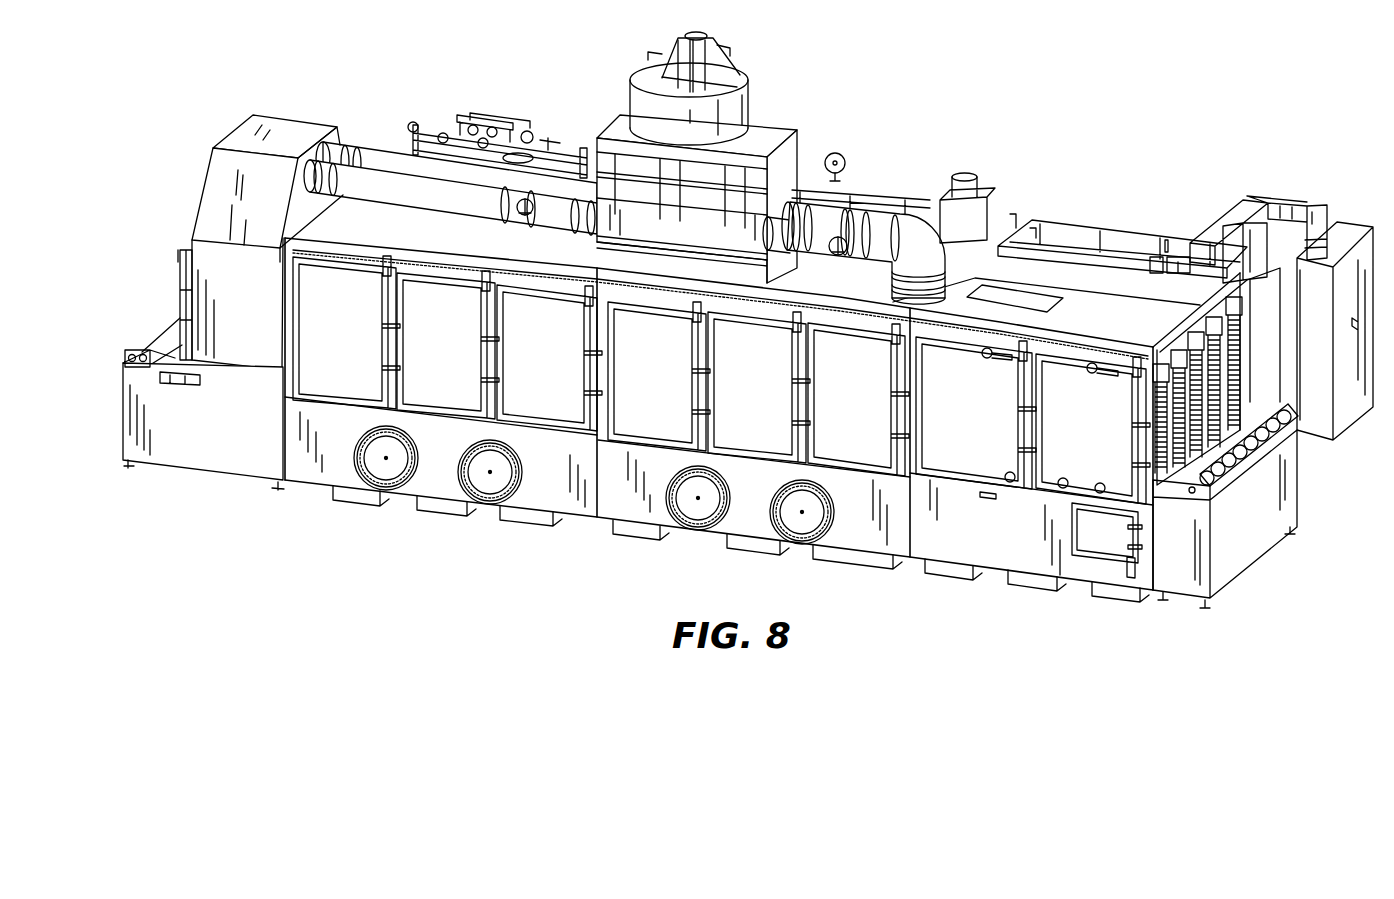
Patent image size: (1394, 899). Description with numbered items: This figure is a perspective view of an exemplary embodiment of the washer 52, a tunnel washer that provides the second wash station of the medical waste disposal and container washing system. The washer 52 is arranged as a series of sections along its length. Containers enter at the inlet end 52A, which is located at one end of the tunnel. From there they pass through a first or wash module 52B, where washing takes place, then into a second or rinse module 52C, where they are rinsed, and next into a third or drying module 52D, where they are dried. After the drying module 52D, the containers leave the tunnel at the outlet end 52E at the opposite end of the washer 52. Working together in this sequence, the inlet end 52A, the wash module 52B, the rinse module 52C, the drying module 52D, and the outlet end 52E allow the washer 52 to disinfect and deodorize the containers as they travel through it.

The washer 52 is at (732, 337).
The inlet end 52A is at (170, 186).
The wash module 52B is at (443, 473).
The rinse module 52C is at (665, 508).
The drying module 52D is at (968, 528).
The outlet end 52E is at (1211, 441).